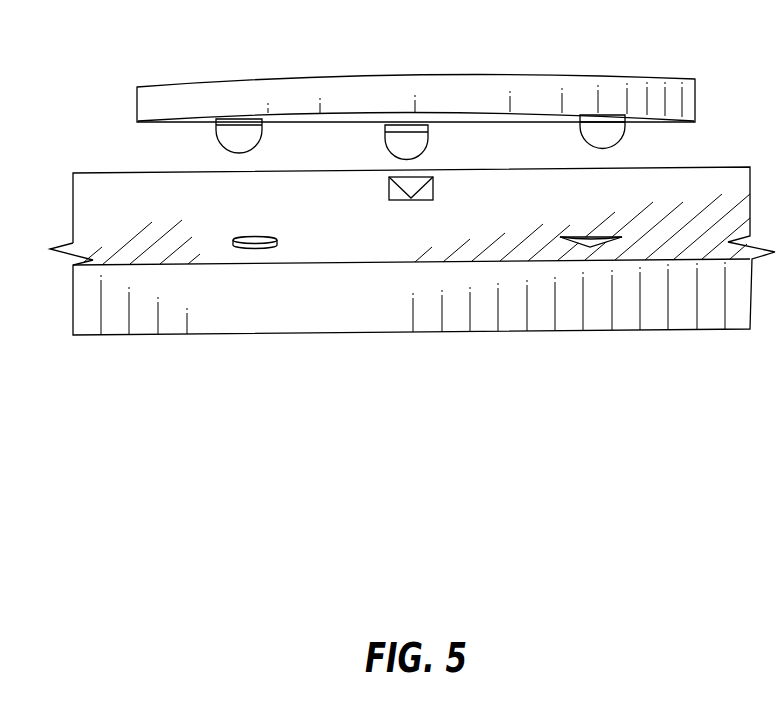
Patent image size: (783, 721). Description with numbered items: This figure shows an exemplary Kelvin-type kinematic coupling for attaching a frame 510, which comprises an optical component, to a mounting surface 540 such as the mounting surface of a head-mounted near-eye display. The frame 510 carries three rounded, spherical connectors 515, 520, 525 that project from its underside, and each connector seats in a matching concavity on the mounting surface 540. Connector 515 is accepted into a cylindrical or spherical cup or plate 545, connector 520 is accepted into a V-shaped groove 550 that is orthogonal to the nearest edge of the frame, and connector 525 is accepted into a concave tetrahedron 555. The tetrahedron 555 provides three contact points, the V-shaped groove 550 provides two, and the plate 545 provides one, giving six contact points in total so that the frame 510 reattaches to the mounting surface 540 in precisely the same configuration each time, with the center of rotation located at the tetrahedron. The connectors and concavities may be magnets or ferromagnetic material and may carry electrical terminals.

The frame 510 is at (493, 75).
The rounded spherical connector 515 is at (252, 133).
The rounded spherical connector 520 is at (420, 140).
The rounded spherical connector 525 is at (617, 129).
The mounting surface 540 is at (105, 188).
The cup or plate 545 is at (256, 237).
The V-shaped groove 550 is at (394, 188).
The concave tetrahedron 555 is at (583, 234).